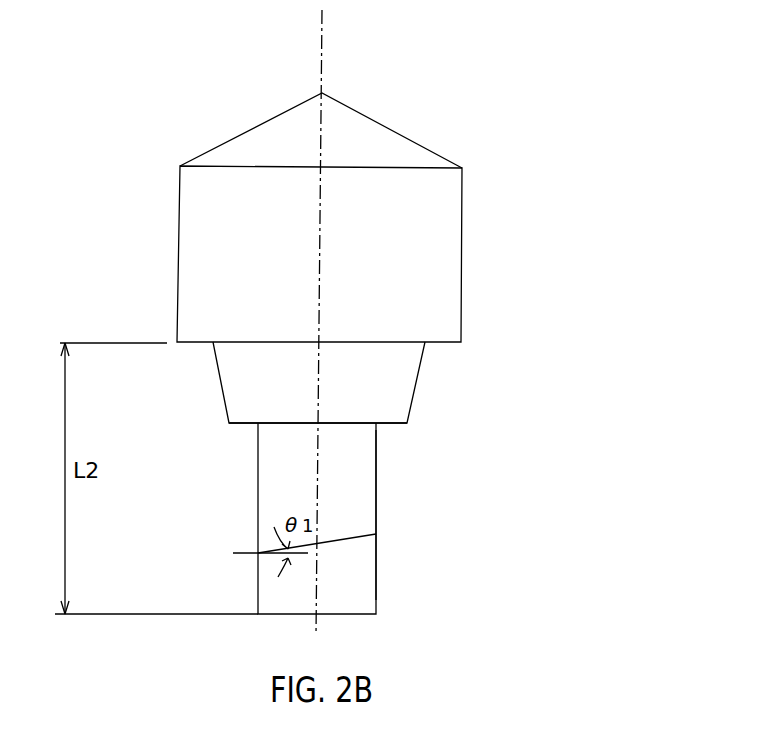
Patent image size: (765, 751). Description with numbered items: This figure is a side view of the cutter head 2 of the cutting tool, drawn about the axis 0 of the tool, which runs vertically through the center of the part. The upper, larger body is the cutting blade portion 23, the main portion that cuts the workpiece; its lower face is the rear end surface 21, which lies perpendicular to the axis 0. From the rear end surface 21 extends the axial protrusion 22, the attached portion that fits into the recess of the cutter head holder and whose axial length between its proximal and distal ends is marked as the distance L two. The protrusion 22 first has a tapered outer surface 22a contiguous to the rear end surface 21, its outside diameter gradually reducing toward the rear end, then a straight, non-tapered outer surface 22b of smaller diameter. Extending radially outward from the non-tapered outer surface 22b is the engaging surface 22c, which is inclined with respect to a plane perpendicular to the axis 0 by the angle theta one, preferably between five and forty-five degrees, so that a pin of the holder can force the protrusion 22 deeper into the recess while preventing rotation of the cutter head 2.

The axis 0 is at (322, 56).
The cutter head 2 is at (581, 82).
The cutting blade portion 23 is at (428, 152).
The rear end surface 21 is at (449, 344).
The axial protrusion 22 is at (543, 460).
The tapered outer surface 22a is at (407, 408).
The non-tapered outer surface 22b is at (372, 500).
The engaging surface 22c is at (353, 535).